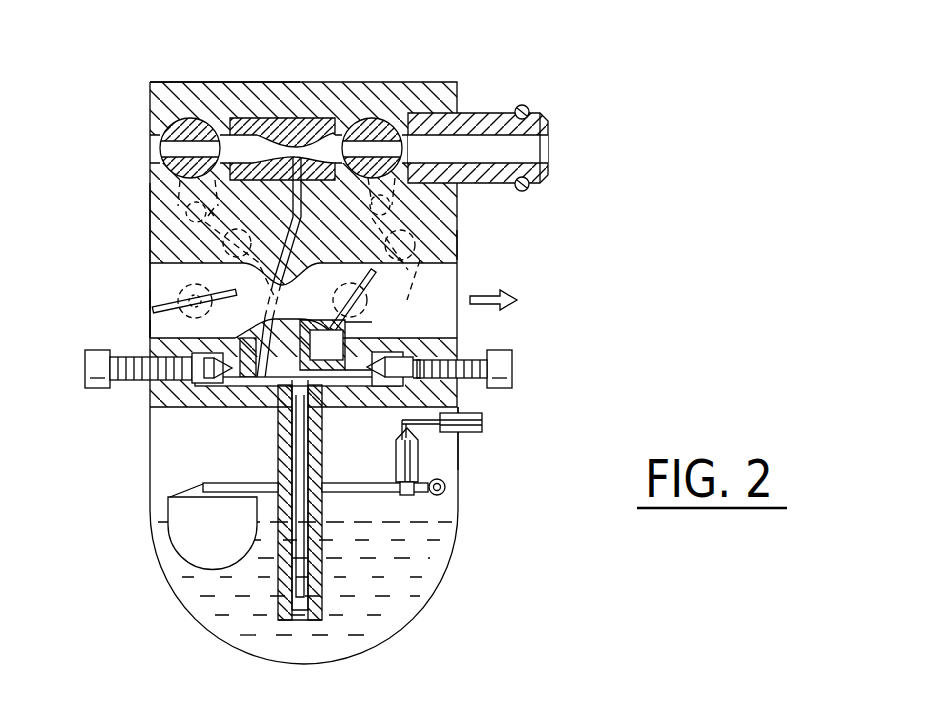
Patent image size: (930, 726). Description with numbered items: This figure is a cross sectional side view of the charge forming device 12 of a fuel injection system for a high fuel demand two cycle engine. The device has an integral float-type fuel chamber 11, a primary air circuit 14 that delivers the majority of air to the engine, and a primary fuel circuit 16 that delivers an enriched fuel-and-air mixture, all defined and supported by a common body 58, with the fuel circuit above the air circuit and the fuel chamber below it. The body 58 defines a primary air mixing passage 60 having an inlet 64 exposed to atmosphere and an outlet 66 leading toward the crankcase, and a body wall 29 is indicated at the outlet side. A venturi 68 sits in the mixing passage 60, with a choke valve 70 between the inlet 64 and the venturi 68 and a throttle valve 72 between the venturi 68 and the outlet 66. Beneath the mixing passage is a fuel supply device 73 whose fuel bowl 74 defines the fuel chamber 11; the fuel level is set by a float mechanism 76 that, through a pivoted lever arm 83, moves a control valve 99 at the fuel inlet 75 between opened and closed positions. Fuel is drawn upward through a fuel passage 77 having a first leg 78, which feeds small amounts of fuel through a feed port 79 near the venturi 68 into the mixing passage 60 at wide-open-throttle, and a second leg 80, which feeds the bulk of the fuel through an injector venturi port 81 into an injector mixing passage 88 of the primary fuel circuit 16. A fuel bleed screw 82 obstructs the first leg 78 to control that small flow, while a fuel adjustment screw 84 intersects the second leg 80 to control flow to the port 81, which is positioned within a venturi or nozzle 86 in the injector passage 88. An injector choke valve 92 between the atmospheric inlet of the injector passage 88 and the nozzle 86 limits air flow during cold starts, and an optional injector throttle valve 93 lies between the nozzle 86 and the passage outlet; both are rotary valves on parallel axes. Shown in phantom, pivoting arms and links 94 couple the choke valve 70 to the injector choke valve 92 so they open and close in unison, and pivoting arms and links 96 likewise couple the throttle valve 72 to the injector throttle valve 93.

The float-type fuel chamber 11 is at (366, 592).
The charge forming device 12 is at (588, 44).
The primary air circuit 14 is at (148, 264).
The primary fuel circuit 16 is at (262, 82).
The body wall 29 is at (448, 248).
The body 58 is at (153, 200).
The primary air mixing passage 60 is at (165, 329).
The inlet 64 is at (150, 299).
The outlet 66 is at (462, 272).
The venturi 68 is at (292, 322).
The choke valve 70 is at (160, 303).
The throttle valve 72 is at (380, 283).
The fuel supply device 73 is at (452, 563).
The fuel bowl 74 is at (462, 512).
The fuel inlet 75 is at (450, 437).
The float mechanism 76 is at (220, 538).
The fuel passage 77 is at (296, 440).
The first leg 78 is at (382, 392).
The feed port 79 is at (348, 323).
The second leg 80 is at (210, 385).
The injector venturi port 81 is at (313, 137).
The fuel bleed screw 82 is at (508, 360).
The pivoted lever arm 83 is at (357, 494).
The fuel adjustment screw 84 is at (92, 360).
The venturi or nozzle 86 is at (300, 133).
The injector mixing passage 88 is at (410, 150).
The injector choke valve 92 is at (192, 128).
The injector throttle valve 93 is at (374, 123).
The pivoting arms and links 94 is at (182, 211).
The pivoting arms and links 96 is at (420, 210).
The control valve 99 is at (418, 463).